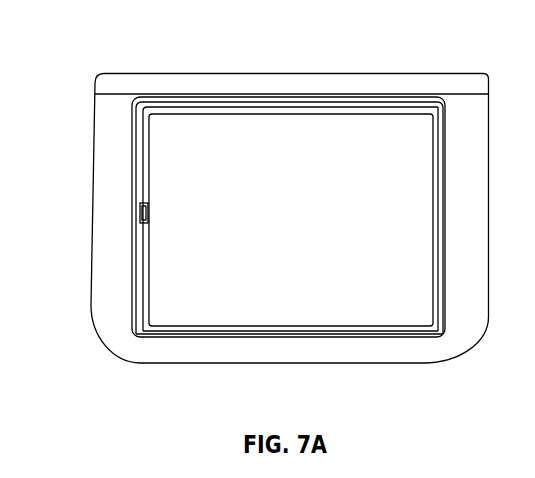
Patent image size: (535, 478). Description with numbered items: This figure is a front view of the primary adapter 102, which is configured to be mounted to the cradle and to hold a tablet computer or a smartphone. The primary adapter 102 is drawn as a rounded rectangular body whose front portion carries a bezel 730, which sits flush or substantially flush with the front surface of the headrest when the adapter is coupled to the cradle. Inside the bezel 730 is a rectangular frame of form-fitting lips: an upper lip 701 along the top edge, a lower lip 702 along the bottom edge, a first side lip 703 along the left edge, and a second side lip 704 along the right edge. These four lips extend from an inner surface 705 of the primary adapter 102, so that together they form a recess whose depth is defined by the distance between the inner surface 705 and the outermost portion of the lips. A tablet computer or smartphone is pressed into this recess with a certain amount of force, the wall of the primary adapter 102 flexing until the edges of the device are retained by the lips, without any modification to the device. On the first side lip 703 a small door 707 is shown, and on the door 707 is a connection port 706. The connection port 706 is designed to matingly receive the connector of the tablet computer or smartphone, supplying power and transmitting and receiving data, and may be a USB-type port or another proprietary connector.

The primary adapter 102 is at (299, 404).
The upper lip 701 is at (376, 108).
The lower lip 702 is at (199, 331).
The first side lip 703 is at (150, 152).
The second side lip 704 is at (437, 148).
The inner surface 705 is at (190, 271).
The connection port 706 is at (141, 228).
The door 707 is at (141, 195).
The bezel 730 is at (460, 330).